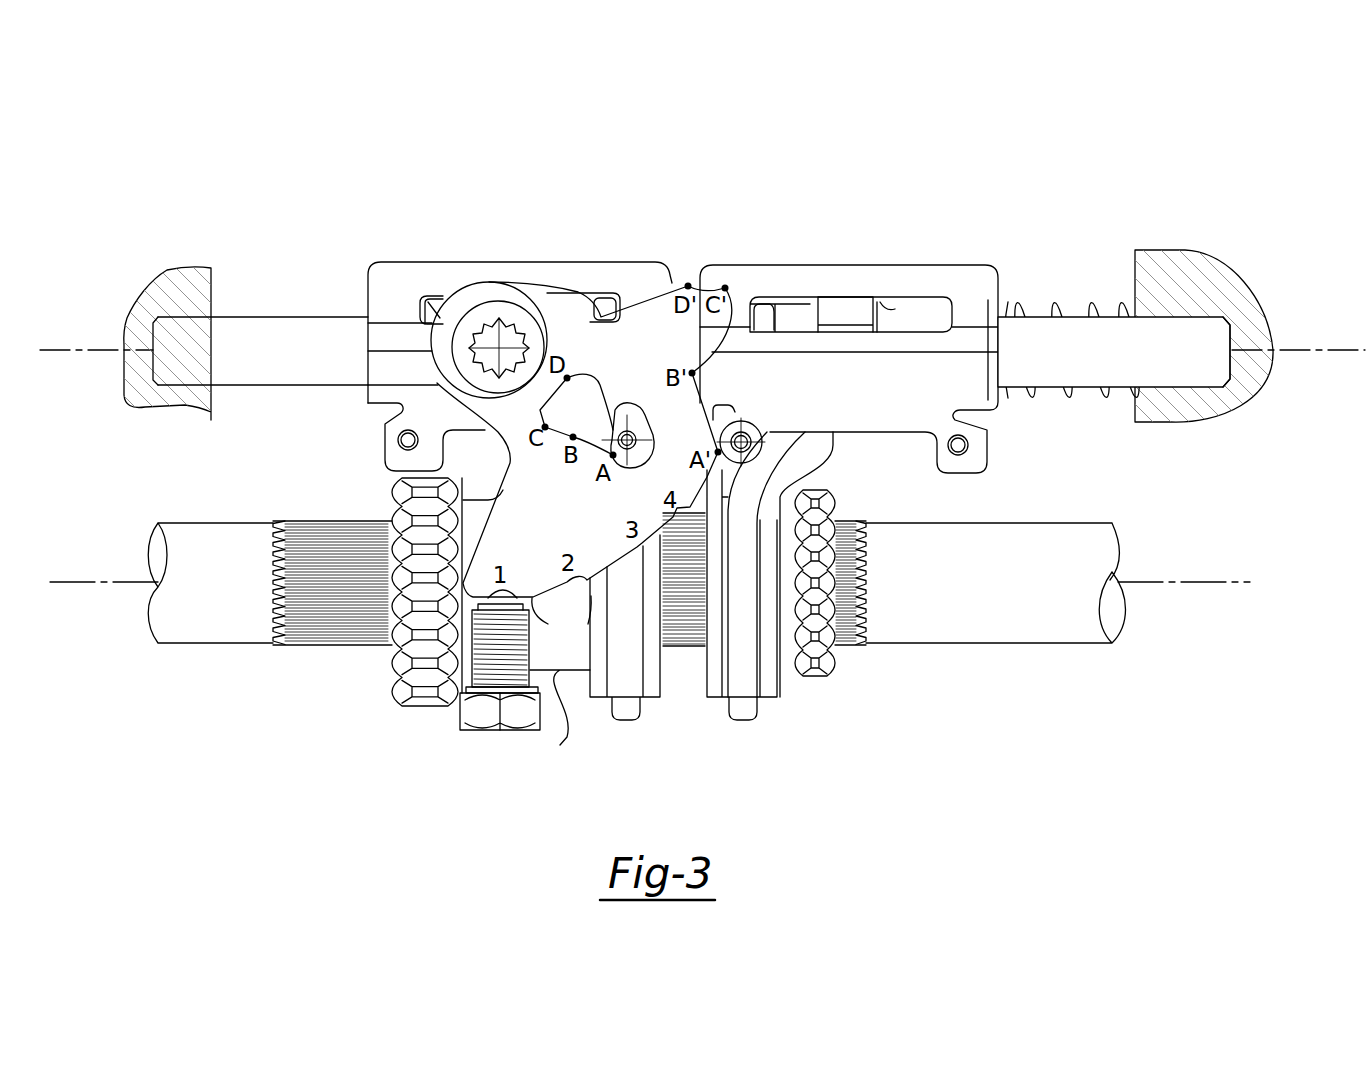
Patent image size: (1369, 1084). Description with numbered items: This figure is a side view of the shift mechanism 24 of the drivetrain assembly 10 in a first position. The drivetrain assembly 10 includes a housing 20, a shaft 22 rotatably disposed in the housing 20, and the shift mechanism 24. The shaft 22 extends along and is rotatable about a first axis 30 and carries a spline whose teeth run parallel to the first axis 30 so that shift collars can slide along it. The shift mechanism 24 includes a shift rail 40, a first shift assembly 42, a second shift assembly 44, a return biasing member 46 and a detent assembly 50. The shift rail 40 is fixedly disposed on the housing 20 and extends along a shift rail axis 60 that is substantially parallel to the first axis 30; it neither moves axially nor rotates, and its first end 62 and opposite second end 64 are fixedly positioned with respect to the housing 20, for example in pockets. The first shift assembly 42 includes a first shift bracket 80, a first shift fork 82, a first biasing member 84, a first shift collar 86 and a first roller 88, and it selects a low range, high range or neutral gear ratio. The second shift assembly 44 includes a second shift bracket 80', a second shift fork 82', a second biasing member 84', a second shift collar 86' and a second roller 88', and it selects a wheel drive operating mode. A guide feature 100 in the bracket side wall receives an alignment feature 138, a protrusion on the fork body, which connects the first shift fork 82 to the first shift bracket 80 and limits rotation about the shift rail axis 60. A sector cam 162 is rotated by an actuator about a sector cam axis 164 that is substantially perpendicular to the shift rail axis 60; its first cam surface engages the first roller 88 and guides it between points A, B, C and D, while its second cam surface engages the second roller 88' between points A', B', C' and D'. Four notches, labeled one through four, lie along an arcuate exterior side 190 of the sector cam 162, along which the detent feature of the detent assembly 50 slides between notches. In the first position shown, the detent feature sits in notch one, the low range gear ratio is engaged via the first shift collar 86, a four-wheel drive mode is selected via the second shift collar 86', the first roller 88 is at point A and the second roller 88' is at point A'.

The drivetrain assembly 10 is at (370, 163).
The housing 20 is at (188, 266).
The shaft 22 is at (195, 645).
The shift mechanism 24 is at (917, 760).
The first axis 30 is at (1215, 582).
The shift rail 40 is at (305, 316).
The first shift assembly 42 is at (547, 752).
The second shift assembly 44 is at (768, 757).
The return biasing member 46 is at (1056, 303).
The detent assembly 50 is at (519, 731).
The shift rail axis 60 is at (1340, 352).
The first end 62 is at (152, 335).
The second end 64 is at (1233, 333).
The first shift bracket 80 is at (520, 348).
The second shift bracket 80' is at (849, 335).
The first shift fork 82 is at (625, 656).
The second shift fork 82' is at (720, 624).
The first biasing member 84 is at (602, 258).
The second biasing member 84' is at (788, 263).
The first shift collar 86 is at (526, 628).
The second shift collar 86' is at (780, 605).
The first roller 88 is at (600, 421).
The second roller 88' is at (775, 424).
The guide feature 100 is at (440, 300).
The alignment feature 138 is at (847, 310).
The sector cam 162 is at (521, 283).
The sector cam axis 164 is at (485, 340).
The arcuate exterior side 190 is at (561, 622).